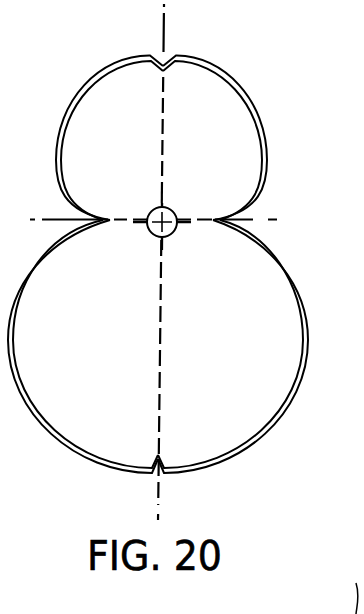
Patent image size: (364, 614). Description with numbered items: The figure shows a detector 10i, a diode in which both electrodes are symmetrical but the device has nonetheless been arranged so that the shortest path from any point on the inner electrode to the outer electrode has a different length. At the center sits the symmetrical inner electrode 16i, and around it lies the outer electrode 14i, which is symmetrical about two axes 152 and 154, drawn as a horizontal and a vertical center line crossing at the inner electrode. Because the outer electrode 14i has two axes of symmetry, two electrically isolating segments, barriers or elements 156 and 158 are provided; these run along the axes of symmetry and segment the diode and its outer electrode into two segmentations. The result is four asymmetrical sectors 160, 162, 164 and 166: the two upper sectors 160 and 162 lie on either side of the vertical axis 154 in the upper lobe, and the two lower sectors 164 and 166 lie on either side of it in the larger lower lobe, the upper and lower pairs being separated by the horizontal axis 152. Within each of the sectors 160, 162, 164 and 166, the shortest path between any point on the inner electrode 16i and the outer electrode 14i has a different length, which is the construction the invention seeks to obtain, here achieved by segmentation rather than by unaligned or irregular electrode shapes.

The detector 10i is at (158, 261).
The outer electrode 14i is at (72, 98).
The inner electrode 16i is at (172, 206).
The axis of symmetry 152 is at (248, 220).
The axis of symmetry 154 is at (163, 36).
The electrically isolating element 156 is at (162, 127).
The electrically isolating element 158 is at (184, 217).
The asymmetrical sector 160 is at (95, 137).
The asymmetrical sector 162 is at (223, 129).
The asymmetrical sector 164 is at (110, 346).
The asymmetrical sector 166 is at (245, 346).